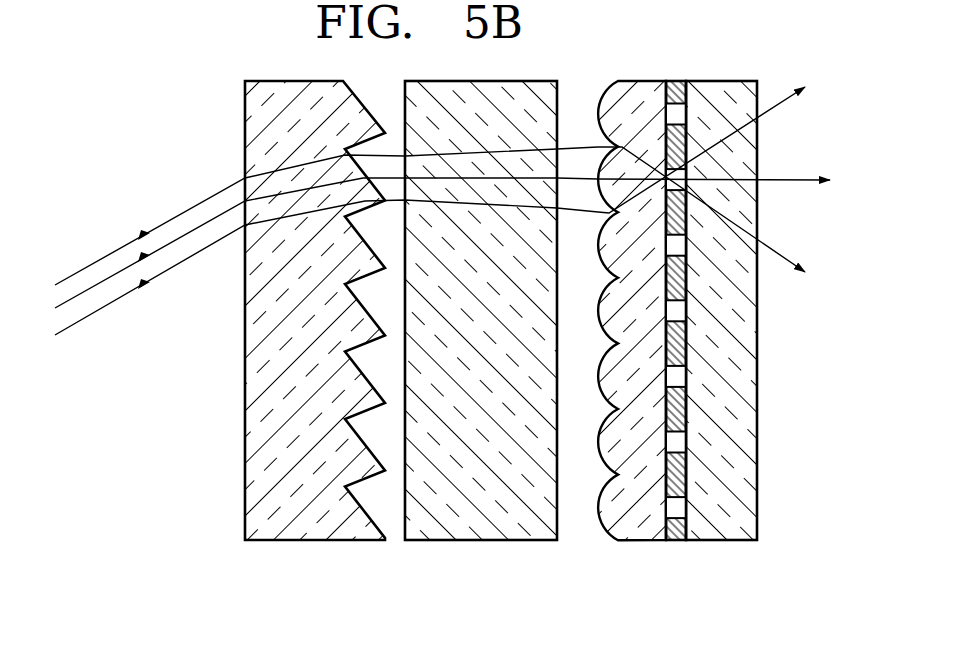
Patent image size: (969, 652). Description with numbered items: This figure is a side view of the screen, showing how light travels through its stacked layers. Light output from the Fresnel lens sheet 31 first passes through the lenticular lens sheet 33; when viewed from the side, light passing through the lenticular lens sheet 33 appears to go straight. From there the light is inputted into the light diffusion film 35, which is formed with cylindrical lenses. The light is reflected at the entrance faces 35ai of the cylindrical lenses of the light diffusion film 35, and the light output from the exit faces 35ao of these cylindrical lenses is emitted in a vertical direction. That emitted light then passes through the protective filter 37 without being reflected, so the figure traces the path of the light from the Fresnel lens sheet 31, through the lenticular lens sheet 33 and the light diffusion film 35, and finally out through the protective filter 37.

The Fresnel lens sheet 31 is at (306, 542).
The lenticular lens sheet 33 is at (484, 542).
The light diffusion film 35 is at (596, 357).
The entrance faces 35ai is at (603, 537).
The exit faces 35ao is at (665, 528).
The protective filter 37 is at (721, 542).